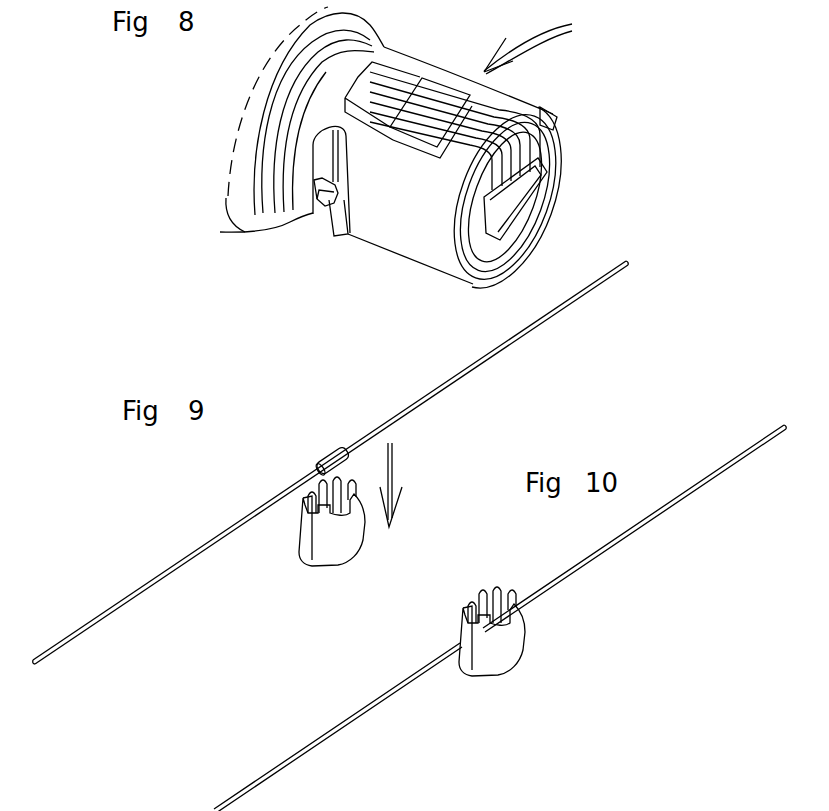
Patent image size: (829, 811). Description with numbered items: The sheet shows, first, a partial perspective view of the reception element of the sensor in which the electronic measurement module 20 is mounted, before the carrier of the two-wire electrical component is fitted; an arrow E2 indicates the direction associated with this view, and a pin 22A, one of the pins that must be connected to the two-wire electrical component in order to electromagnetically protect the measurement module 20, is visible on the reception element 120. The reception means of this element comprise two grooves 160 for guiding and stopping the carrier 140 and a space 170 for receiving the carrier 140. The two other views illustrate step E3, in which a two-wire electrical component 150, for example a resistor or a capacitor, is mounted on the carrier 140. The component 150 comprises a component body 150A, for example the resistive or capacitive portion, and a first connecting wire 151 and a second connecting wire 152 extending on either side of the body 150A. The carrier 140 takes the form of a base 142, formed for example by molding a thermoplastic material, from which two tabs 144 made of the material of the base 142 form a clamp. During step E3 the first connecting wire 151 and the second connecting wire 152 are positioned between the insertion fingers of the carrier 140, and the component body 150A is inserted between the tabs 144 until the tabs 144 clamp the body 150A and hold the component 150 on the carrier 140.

In FIG. 8, the electronic measurement module 20 is at (431, 115).
In FIG. 8, the insertion direction E2 is at (543, 43).
In FIG. 8, the pin 22A is at (306, 221).
In FIG. 8, the housing 120 is at (415, 245).
In FIG. 8, the grooves 160 is at (333, 215).
In FIG. 8, the space 170 is at (329, 236).
In FIG. 9, the two-wire electrical component 150 is at (339, 462).
In FIG. 10, the two-wire electrical component 150 is at (495, 618).
In FIG. 9, the component body 150A is at (335, 462).
In FIG. 9, the first connecting wire 151 is at (124, 600).
In FIG. 10, the first connecting wire 151 is at (283, 762).
In FIG. 9, the second connecting wire 152 is at (560, 312).
In FIG. 10, the second connecting wire 152 is at (672, 510).
In FIG. 9, the step E3 is at (403, 485).
In FIG. 9, the carrier 140 is at (280, 559).
In FIG. 10, the carrier 140 is at (529, 635).
In FIG. 9, the base 142 is at (325, 577).
In FIG. 10, the base 142 is at (484, 675).
In FIG. 9, the tabs 144 is at (332, 495).
In FIG. 10, the tabs 144 is at (479, 573).